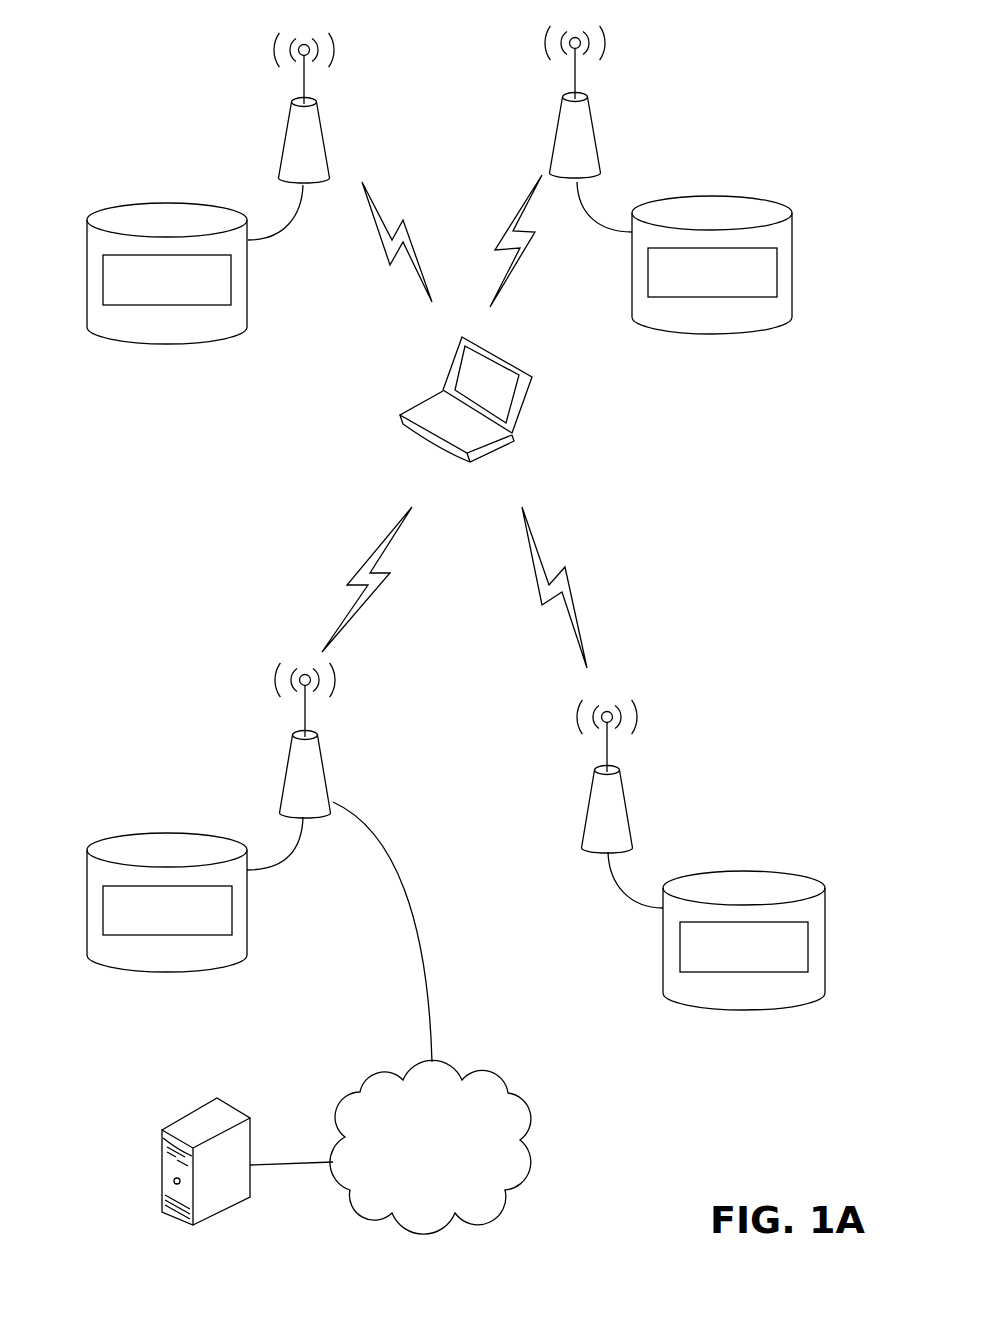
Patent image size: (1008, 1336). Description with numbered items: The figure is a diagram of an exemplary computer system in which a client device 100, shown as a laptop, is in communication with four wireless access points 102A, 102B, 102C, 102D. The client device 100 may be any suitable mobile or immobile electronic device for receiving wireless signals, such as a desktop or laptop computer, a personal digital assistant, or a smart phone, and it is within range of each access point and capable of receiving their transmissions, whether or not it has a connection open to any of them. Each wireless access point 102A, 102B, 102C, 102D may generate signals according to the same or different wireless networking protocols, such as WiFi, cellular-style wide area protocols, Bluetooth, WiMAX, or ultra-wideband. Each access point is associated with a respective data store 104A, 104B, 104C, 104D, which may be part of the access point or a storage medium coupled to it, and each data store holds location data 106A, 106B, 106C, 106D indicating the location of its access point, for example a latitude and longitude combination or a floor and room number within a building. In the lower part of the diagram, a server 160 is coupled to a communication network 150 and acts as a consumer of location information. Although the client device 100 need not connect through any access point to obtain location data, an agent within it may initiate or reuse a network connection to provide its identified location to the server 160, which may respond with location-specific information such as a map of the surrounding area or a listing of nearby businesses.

The client device 100 is at (543, 380).
The wireless access point 102A is at (278, 130).
The wireless access point 102B is at (598, 122).
The wireless access point 102C is at (278, 758).
The wireless access point 102D is at (632, 797).
The data store 104A is at (132, 198).
The data store 104B is at (755, 192).
The data store 104C is at (127, 830).
The data store 104D is at (785, 867).
The location data 106A is at (217, 310).
The location data 106B is at (752, 300).
The location data 106C is at (217, 942).
The location data 106D is at (695, 977).
The network 150 is at (430, 1147).
The server 160 is at (188, 1105).